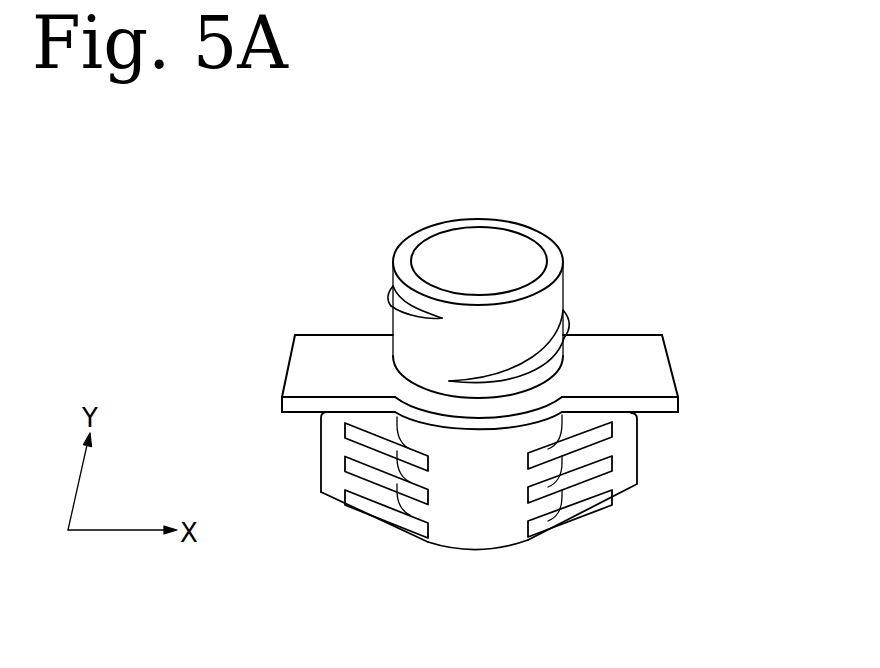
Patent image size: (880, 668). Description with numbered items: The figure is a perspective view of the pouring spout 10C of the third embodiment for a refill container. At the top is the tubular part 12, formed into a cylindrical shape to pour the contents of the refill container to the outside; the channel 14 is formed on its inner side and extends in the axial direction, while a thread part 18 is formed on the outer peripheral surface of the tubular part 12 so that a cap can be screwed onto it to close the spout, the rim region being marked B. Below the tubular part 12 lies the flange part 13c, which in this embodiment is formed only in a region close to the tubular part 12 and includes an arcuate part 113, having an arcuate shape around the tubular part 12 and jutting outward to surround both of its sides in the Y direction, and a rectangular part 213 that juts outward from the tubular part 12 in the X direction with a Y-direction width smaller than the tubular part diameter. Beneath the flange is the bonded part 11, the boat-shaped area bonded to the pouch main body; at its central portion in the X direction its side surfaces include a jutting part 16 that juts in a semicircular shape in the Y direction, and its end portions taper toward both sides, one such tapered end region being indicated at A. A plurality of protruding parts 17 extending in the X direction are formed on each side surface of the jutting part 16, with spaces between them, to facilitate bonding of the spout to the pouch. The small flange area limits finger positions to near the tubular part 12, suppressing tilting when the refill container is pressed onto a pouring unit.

The pouring spout 10C is at (348, 216).
The tubular part 12 is at (549, 247).
The channel 14 is at (427, 273).
The region B is at (507, 222).
The thread part 18 is at (566, 318).
The flange part 13c is at (660, 357).
The rectangular part 213 is at (622, 342).
The bonded part 11 is at (485, 555).
The jutting part 16 is at (448, 540).
The arcuate part 113 is at (487, 427).
The protruding part 17 is at (353, 433).
The region A is at (403, 533).